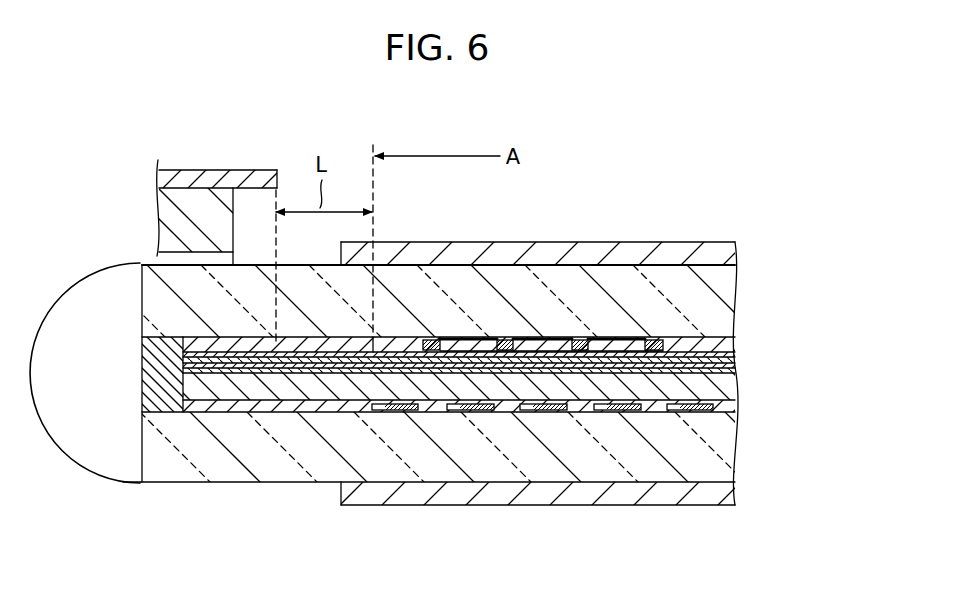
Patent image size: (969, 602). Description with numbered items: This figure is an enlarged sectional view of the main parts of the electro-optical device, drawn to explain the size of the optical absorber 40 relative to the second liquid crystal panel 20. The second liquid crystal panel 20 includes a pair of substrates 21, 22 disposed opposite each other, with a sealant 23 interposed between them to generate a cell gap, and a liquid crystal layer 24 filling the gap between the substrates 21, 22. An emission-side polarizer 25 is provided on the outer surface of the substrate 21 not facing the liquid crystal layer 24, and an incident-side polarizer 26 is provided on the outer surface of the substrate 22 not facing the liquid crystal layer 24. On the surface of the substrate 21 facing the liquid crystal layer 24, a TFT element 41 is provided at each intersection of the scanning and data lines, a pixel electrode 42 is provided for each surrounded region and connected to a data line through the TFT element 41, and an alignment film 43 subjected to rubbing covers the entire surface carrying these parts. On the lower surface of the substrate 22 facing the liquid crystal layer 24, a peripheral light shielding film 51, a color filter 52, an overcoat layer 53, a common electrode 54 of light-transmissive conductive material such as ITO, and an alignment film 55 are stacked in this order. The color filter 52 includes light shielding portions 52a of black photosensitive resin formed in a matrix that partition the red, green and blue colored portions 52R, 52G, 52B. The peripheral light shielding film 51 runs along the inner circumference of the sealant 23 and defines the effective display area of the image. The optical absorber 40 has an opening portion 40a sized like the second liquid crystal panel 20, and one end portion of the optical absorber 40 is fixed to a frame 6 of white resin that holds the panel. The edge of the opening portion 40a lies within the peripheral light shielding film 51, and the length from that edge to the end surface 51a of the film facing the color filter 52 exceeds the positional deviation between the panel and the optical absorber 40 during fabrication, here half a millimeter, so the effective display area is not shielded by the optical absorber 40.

The frame 6 is at (173, 205).
The second liquid crystal panel 20 is at (782, 269).
The substrate 21 is at (724, 462).
The substrate 22 is at (713, 305).
The sealant 23 is at (158, 402).
The liquid crystal layer 24 is at (268, 390).
The emission-side polarizer 25 is at (511, 500).
The incident-side polarizer 26 is at (697, 255).
The optical absorber 40 is at (221, 178).
The opening portion 40a is at (279, 180).
The TFT element 41 is at (373, 411).
The pixel electrode 42 is at (406, 411).
The alignment film 43 is at (735, 400).
The peripheral light shielding film 51 is at (217, 343).
The end surface 51a is at (435, 338).
The color filter 52 is at (563, 332).
The red colored portion 52R is at (470, 338).
The green colored portion 52G is at (543, 338).
The blue colored portion 52B is at (617, 338).
The light shielding portion 52a is at (432, 338).
The overcoat layer 53 is at (735, 345).
The common electrode 54 is at (735, 357).
The alignment film 55 is at (735, 368).